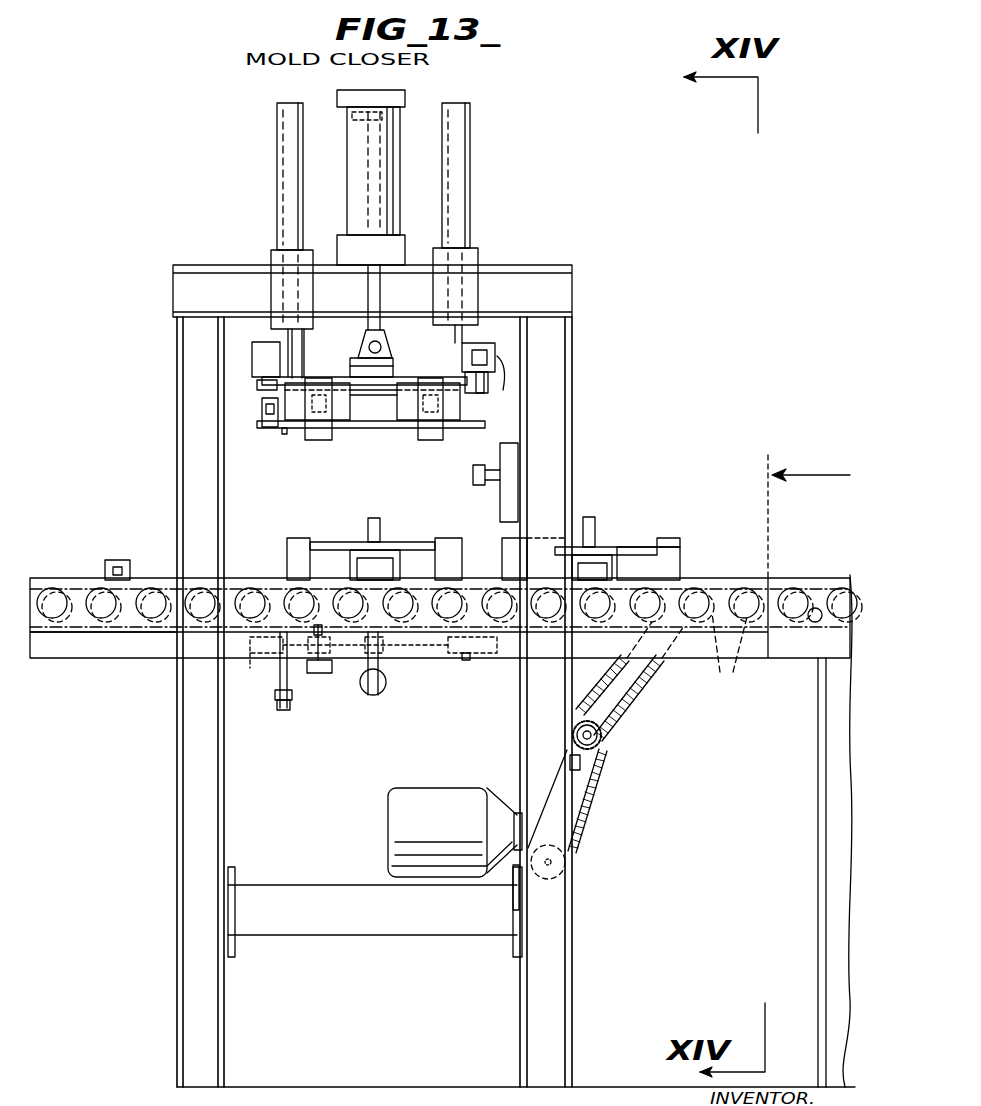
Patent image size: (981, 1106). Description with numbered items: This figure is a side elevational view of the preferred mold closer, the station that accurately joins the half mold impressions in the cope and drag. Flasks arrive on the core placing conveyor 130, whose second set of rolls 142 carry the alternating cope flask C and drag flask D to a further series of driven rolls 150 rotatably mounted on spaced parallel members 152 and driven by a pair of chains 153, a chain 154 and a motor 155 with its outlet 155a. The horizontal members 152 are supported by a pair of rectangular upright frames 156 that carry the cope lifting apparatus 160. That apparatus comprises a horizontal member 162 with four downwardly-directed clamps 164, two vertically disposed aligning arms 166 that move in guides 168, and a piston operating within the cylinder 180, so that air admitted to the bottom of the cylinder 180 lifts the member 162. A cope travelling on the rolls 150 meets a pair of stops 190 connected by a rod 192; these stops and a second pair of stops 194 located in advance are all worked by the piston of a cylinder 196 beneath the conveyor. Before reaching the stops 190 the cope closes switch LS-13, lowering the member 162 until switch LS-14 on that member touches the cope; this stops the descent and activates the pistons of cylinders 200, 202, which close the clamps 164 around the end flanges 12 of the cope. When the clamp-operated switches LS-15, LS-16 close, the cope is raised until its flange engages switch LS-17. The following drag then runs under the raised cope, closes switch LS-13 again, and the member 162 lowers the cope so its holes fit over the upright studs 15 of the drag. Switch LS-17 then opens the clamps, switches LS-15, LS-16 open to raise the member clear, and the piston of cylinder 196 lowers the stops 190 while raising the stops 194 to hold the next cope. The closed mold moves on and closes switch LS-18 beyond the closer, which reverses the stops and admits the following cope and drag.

The flange 12 is at (487, 533).
The stud 15 is at (366, 530).
The core placing conveyor 130 is at (446, 771).
The second set of rolls 142 is at (820, 622).
The driven rolls 150 is at (718, 658).
The spaced parallel members 152 is at (118, 652).
The pair of chains 153 is at (632, 700).
The chain 154 is at (585, 806).
The motor 155 is at (420, 800).
The hopper nozzle 155a is at (530, 810).
The rectangular upright frames 156 is at (560, 379).
The cope lifting apparatus 160 is at (388, 219).
The horizontal member 162 is at (378, 421).
The downwardly-directed clamps 164 is at (318, 433).
The aligning arms 166 is at (290, 338).
The guides 168 is at (280, 171).
The cylinder 180 is at (358, 135).
The stops 190 is at (340, 669).
The rod 192 is at (285, 688).
The second pair of stops 194 is at (447, 655).
The cylinder 196 is at (386, 686).
The cylinder 200 is at (491, 384).
The cylinder 202 is at (265, 352).
The cope flask C is at (322, 545).
The drag flask D is at (665, 545).
The switch LS-13 is at (316, 675).
The switch LS-14 is at (268, 408).
The solenoid switch LS-15 is at (320, 395).
The solenoid switch LS-16 is at (430, 395).
The switch LS-17 is at (510, 495).
The switch LS-18 is at (105, 570).